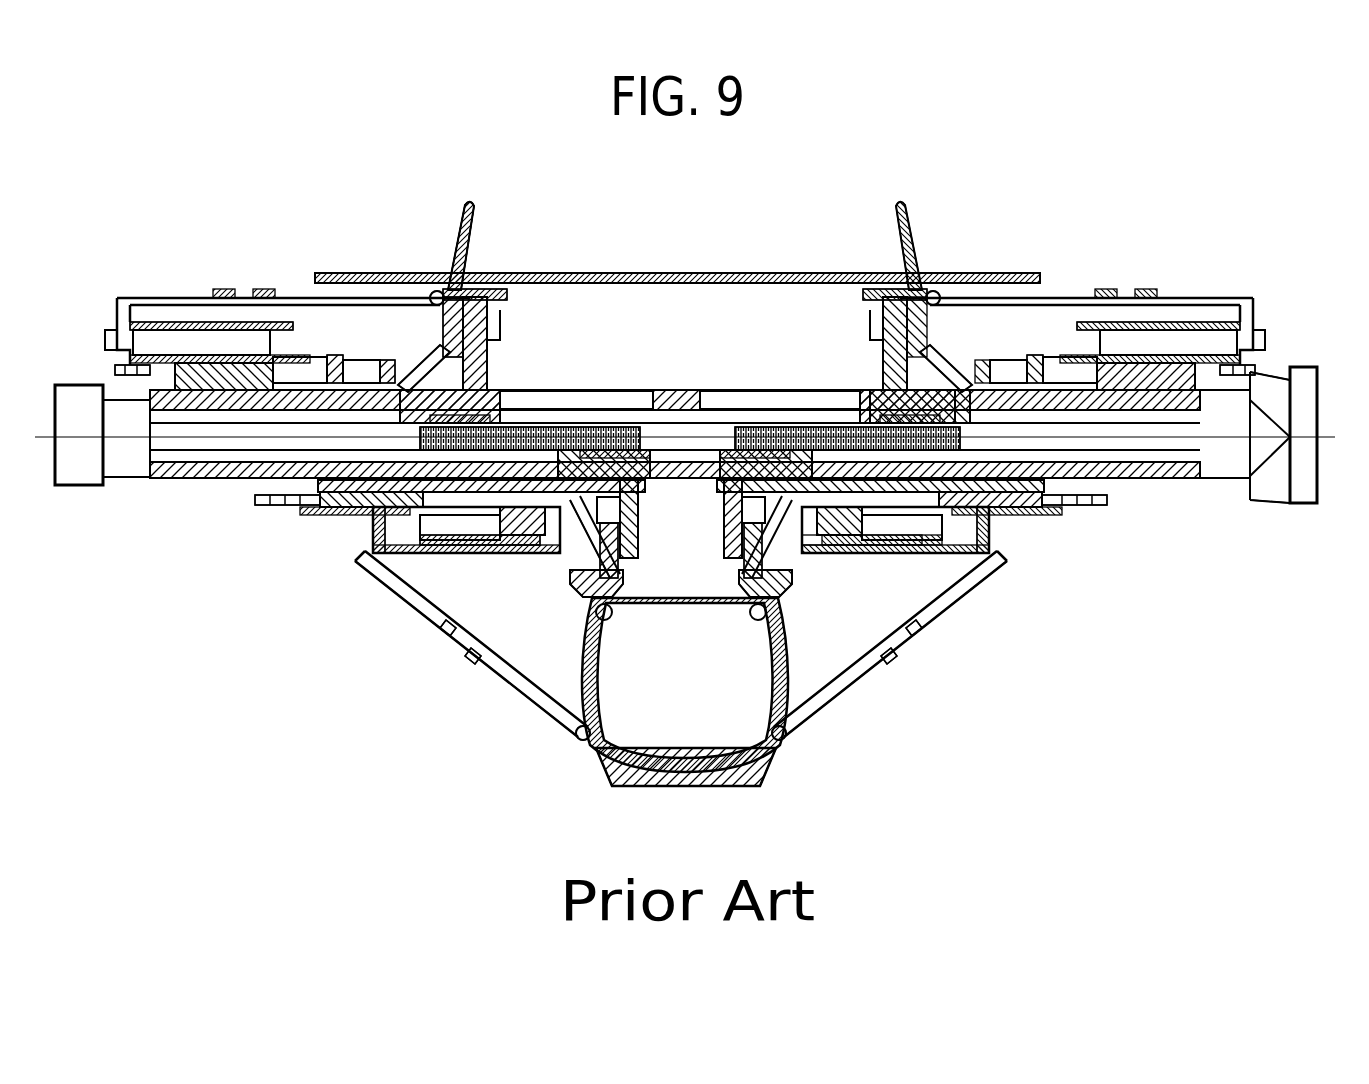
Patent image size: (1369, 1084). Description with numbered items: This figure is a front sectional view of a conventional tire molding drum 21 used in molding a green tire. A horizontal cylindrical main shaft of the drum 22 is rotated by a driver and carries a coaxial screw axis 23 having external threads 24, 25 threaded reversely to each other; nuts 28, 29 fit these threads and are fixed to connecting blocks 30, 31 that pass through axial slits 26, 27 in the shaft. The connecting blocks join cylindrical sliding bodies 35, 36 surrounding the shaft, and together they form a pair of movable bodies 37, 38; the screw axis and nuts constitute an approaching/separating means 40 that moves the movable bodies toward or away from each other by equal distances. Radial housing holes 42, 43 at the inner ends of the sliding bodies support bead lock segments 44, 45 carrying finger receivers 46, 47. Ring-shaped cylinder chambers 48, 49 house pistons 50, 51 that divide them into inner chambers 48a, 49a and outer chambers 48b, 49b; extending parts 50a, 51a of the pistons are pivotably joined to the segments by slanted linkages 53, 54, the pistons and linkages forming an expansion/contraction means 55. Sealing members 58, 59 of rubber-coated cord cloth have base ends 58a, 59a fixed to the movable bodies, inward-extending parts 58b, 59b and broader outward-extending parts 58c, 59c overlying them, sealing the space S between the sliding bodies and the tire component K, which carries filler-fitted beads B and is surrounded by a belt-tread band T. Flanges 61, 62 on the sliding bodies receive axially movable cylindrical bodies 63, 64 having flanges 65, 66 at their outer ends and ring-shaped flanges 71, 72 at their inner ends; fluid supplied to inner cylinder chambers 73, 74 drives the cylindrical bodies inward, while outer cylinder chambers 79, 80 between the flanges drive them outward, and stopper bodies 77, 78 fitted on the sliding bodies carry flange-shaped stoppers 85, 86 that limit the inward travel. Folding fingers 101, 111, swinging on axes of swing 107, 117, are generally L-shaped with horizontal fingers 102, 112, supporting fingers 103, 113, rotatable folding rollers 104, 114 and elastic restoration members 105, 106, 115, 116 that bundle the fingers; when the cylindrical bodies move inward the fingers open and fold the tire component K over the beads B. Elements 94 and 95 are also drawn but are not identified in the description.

The tire molding drum 21 is at (1073, 242).
The main shaft of the drum 22 is at (1172, 480).
The screw axis 23 is at (1116, 430).
The external thread 24 is at (530, 428).
The external thread 25 is at (762, 428).
The slit 26 is at (624, 412).
The slit 27 is at (700, 405).
The nut 28 is at (470, 396).
The nut 29 is at (852, 404).
The connecting block 30 is at (487, 343).
The connecting block 31 is at (872, 398).
The sliding body 35 is at (106, 340).
The sliding body 36 is at (1262, 470).
The movable body 37 is at (248, 425).
The movable body 38 is at (1152, 442).
The approaching/separating means 40 is at (590, 420).
The housing hole 42 is at (622, 512).
The housing hole 43 is at (724, 506).
The bead lock segment 44 is at (462, 300).
The bead lock segment 45 is at (892, 296).
The finger receiver 46 is at (580, 596).
The finger receiver 47 is at (762, 590).
The cylinder chamber 48 is at (490, 542).
The inner chamber 48a is at (350, 362).
The outer chamber 48b is at (335, 362).
The cylinder chamber 49 is at (888, 545).
The inner chamber 49a is at (1032, 362).
The outer chamber 49b is at (1060, 360).
The piston 50 is at (525, 536).
The extending part 50a is at (385, 362).
The piston 51 is at (846, 556).
The extending part 51a is at (1000, 362).
The linkage 53 is at (430, 358).
The linkage 54 is at (940, 370).
The expansion/contraction means 55 is at (474, 214).
The sealing member 58 is at (510, 296).
The base end 58a is at (622, 562).
The inward-extending part 58b is at (497, 312).
The outward-extending part 58c is at (497, 290).
The sealing member 59 is at (850, 297).
The base end 59a is at (730, 576).
The inward-extending part 59b is at (868, 333).
The outward-extending part 59c is at (840, 293).
The flange 61 is at (412, 572).
The flange 62 is at (958, 542).
The cylindrical body 63 is at (428, 553).
The cylindrical body 64 is at (914, 552).
The flange 65 is at (358, 561).
The flange 66 is at (1004, 566).
The ring-shaped flange 71 is at (300, 360).
The ring-shaped flange 72 is at (1110, 306).
The inner cylinder chamber 73 is at (462, 550).
The inner cylinder chamber 74 is at (862, 550).
The stopper body 77 is at (130, 330).
The stopper body 78 is at (1240, 325).
The outer cylinder chamber 79 is at (160, 330).
The outer cylinder chamber 80 is at (1215, 345).
The stopper 85 is at (205, 340).
The stopper 86 is at (1180, 345).
The left retainer 94 is at (118, 372).
The right retainer 95 is at (1212, 373).
The folding finger 101 is at (447, 762).
The horizontal finger 102 is at (170, 298).
The supporting finger 103 is at (117, 310).
The folding roller 104 is at (576, 738).
The restoration member 105 is at (475, 666).
The restoration member 106 is at (446, 638).
The axis of swing 107 is at (372, 527).
The folding finger 111 is at (950, 720).
The horizontal finger 112 is at (1148, 298).
The supporting finger 113 is at (1258, 342).
The folding roller 114 is at (786, 740).
The restoration member 115 is at (890, 668).
The restoration member 116 is at (924, 638).
The axis of swing 117 is at (992, 540).
The filler-fitted bead B is at (460, 228).
The tire component K is at (700, 272).
The space S is at (690, 497).
The belt-tread band T is at (762, 778).